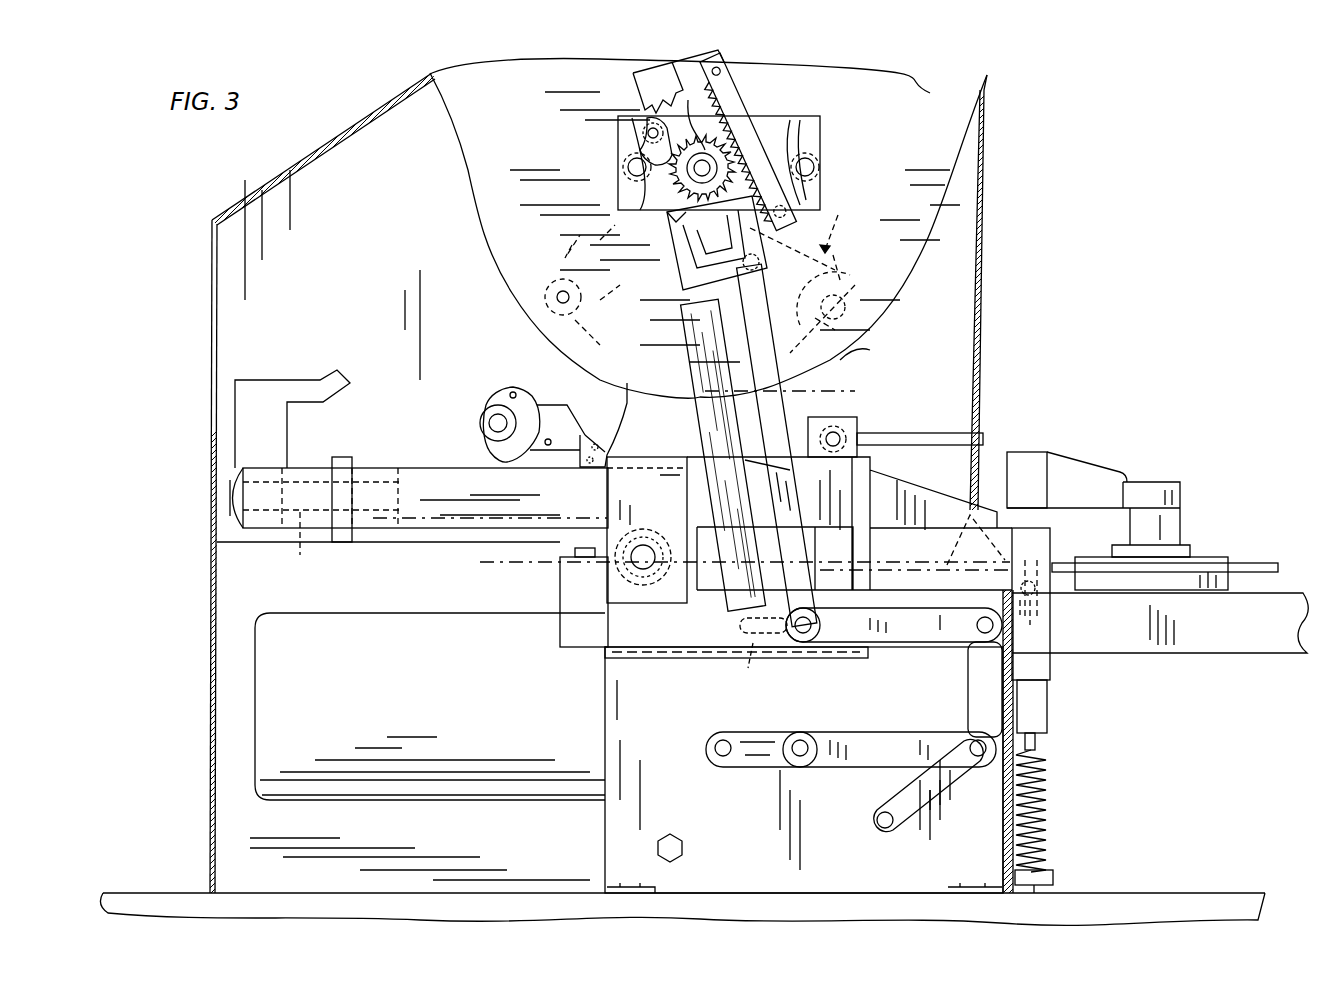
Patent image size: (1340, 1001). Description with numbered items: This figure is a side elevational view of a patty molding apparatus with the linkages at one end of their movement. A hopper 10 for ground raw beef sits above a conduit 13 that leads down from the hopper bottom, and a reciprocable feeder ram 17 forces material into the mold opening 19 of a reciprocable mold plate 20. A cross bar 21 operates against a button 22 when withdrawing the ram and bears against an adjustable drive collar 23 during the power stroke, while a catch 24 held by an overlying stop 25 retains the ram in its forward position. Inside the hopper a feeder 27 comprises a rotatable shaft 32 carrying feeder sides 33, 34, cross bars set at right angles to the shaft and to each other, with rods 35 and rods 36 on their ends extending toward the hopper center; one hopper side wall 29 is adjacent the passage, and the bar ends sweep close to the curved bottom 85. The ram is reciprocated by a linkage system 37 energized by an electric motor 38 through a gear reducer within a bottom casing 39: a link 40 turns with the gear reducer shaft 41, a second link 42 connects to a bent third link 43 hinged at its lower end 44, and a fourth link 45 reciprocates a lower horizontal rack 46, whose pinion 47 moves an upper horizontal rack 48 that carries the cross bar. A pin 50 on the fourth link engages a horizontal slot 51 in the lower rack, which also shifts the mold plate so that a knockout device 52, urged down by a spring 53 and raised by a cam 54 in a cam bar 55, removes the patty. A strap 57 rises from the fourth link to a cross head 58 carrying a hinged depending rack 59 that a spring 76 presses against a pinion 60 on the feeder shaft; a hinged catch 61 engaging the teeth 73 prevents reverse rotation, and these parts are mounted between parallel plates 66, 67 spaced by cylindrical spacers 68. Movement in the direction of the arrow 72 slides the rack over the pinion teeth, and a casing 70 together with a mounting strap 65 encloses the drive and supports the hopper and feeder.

The hopper 10 is at (1000, 90).
The conduit 13 is at (830, 404).
The feeder ram 17 is at (452, 480).
The mold opening 19 is at (1212, 563).
The mold plate 20 is at (1262, 563).
The cross bar 21 is at (317, 545).
The button 22 is at (236, 520).
The adjustable drive collar 23 is at (345, 457).
The catch 24 is at (552, 403).
The stop 25 is at (315, 382).
The feeder 27 is at (802, 235).
The side wall 29 is at (886, 203).
The shaft 32 is at (710, 166).
The feeder side 33 is at (842, 262).
The feeder side 34 is at (565, 255).
The rod 35 is at (818, 328).
The rod 36 is at (590, 312).
The linkage system 37 is at (875, 735).
The electric motor 38 is at (391, 686).
The bottom casing 39 is at (736, 865).
The link 40 is at (752, 740).
The gear reducer shaft 41 is at (710, 760).
The second link 42 is at (875, 762).
The third link 43 is at (960, 800).
The lower end 44 is at (880, 830).
The fourth link 45 is at (918, 640).
The lower horizontal rack 46 is at (563, 606).
The pinion 47 is at (655, 520).
The upper horizontal rack 48 is at (500, 505).
The pin 50 is at (805, 642).
The horizontal slot 51 is at (760, 656).
The knockout device 52 is at (1181, 510).
The spring 53 is at (1045, 800).
The cam 54 is at (1065, 612).
The cam bar 55 is at (1204, 633).
The strap 57 is at (726, 350).
The cross head 58 is at (690, 285).
The depending rack 59 is at (770, 130).
The pinion 60 is at (705, 125).
The catch 61 is at (645, 130).
The mounting strap 65 is at (690, 358).
The plate 66 is at (790, 130).
The plate 67 is at (820, 136).
The cylindrical spacer 68 is at (625, 160).
The casing 70 is at (985, 338).
The arrow 72 is at (705, 745).
The teeth 73 is at (620, 195).
The spring 76 is at (775, 269).
The bottom 85 is at (858, 358).